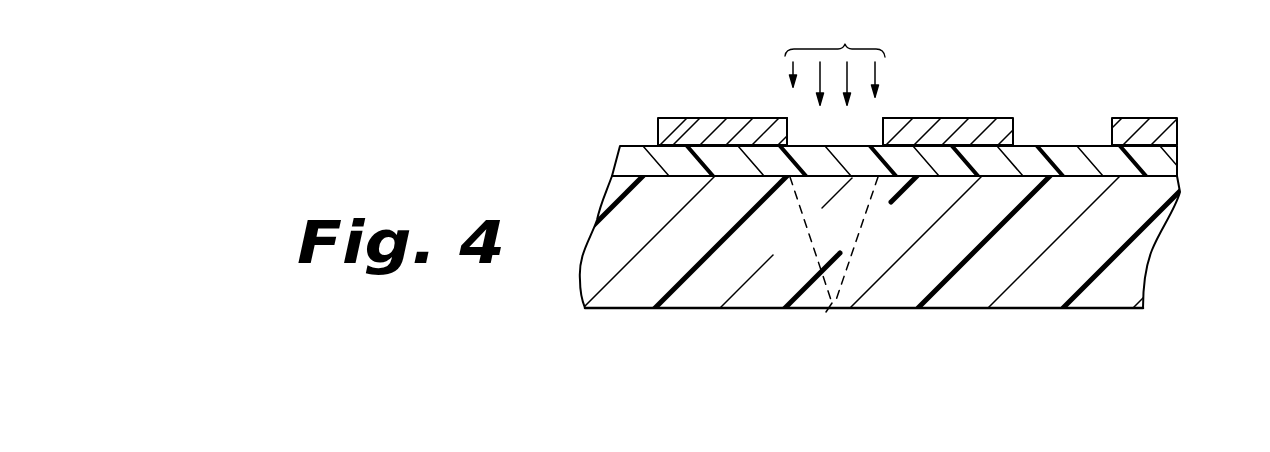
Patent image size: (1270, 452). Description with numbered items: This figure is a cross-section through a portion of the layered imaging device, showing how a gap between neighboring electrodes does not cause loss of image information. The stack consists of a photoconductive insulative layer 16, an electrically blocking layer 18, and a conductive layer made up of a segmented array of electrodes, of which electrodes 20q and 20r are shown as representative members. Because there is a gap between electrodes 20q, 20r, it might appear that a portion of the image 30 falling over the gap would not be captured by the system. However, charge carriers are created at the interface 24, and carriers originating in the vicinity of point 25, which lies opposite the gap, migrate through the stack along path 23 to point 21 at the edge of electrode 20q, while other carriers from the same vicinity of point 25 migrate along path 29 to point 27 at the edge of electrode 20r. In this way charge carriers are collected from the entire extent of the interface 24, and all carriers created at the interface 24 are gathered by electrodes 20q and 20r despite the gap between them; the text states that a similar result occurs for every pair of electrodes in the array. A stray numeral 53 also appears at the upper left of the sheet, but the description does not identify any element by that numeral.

The photoconductive insulative layer 16 is at (1143, 257).
The electrically blocking layer 18 is at (1167, 163).
The electrode 20q is at (705, 127).
The electrode 20r is at (989, 123).
The point 21 is at (788, 143).
The path 23 is at (785, 240).
The interface 24 is at (1106, 310).
The point 25 is at (832, 304).
The point 27 is at (878, 143).
The path 29 is at (873, 240).
The image 30 is at (835, 57).
The reference numeral 53 is at (300, 15).